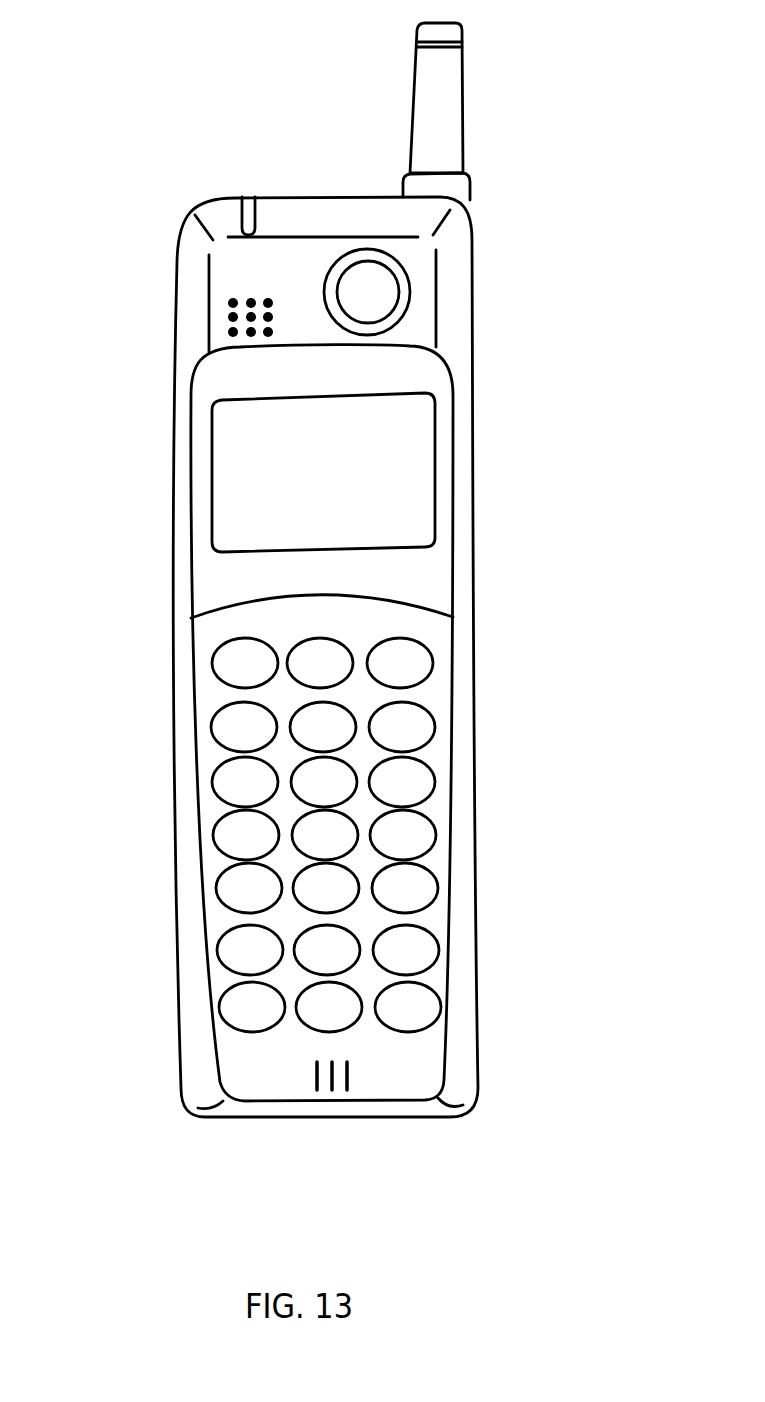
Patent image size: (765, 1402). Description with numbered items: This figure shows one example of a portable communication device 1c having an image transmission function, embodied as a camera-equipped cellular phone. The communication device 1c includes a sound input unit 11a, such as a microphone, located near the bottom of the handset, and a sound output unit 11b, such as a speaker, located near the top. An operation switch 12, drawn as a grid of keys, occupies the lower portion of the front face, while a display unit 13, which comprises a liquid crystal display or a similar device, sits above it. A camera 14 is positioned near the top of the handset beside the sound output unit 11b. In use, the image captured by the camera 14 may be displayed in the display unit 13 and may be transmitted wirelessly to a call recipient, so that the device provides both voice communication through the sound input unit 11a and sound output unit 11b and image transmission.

The portable communication device 1c is at (222, 70).
The sound input unit 11a is at (308, 1077).
The sound output unit 11b is at (250, 290).
The operation switch 12 is at (432, 638).
The display unit 13 is at (407, 487).
The camera 14 is at (388, 285).